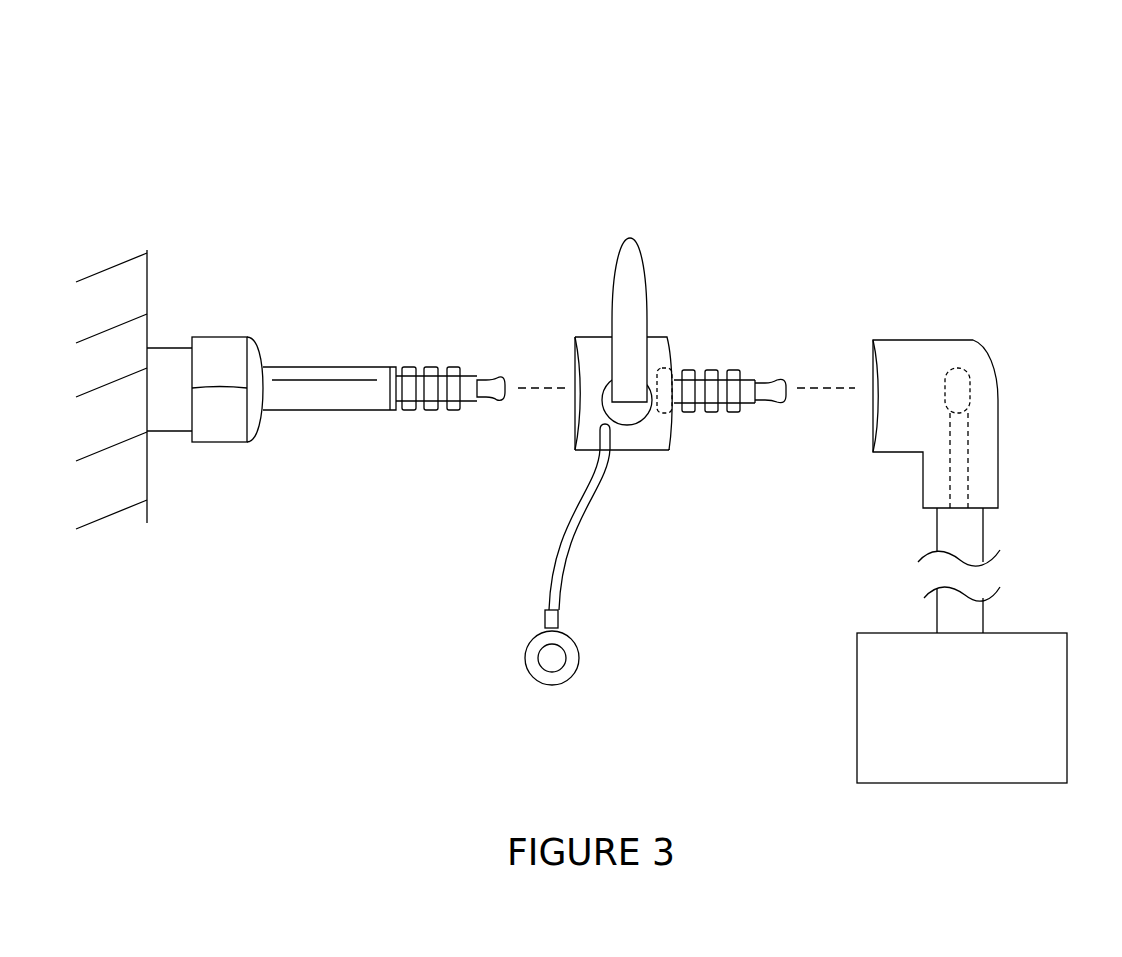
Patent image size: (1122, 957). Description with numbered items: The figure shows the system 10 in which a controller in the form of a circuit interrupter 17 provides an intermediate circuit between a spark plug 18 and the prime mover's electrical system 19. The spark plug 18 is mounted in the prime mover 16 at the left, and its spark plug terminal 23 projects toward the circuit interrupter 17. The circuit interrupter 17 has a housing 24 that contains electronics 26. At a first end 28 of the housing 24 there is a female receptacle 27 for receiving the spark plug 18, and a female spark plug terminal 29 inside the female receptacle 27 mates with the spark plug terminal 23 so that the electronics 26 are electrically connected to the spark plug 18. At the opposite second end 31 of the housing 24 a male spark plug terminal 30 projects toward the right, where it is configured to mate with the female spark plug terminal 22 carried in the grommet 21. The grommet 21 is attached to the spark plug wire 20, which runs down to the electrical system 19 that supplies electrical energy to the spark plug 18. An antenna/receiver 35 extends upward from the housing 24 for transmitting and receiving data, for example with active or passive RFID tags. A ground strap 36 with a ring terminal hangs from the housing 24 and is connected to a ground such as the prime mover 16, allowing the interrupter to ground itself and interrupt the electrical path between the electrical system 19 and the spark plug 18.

The system 10 is at (866, 146).
The prime mover 16 is at (135, 288).
The circuit interrupter 17 is at (666, 330).
The spark plug 18 is at (306, 371).
The electrical system 19 is at (951, 727).
The spark plug wire 20 is at (978, 535).
The grommet 21 is at (952, 340).
The female spark plug terminal 22 is at (972, 377).
The spark plug terminal 23 is at (468, 372).
The housing 24 is at (643, 443).
The electronics 26 is at (627, 427).
The female receptacle 27 is at (572, 371).
The first end 28 is at (575, 450).
The female spark plug terminal 29 is at (675, 362).
The male spark plug terminal 30 is at (750, 380).
The second end 31 is at (675, 430).
The antenna/receiver 35 is at (623, 263).
The ground strap 36 is at (578, 650).